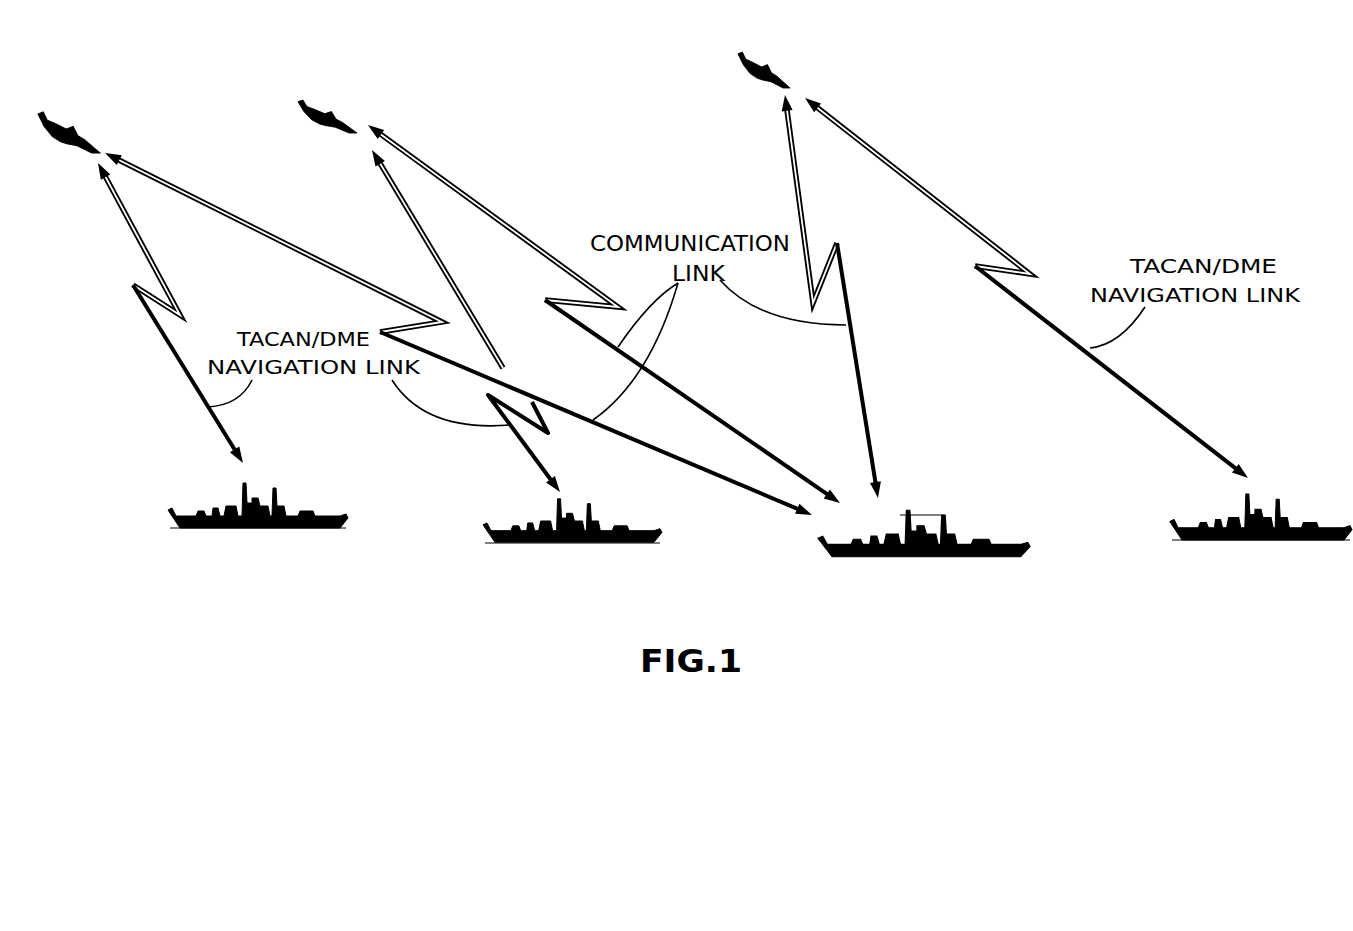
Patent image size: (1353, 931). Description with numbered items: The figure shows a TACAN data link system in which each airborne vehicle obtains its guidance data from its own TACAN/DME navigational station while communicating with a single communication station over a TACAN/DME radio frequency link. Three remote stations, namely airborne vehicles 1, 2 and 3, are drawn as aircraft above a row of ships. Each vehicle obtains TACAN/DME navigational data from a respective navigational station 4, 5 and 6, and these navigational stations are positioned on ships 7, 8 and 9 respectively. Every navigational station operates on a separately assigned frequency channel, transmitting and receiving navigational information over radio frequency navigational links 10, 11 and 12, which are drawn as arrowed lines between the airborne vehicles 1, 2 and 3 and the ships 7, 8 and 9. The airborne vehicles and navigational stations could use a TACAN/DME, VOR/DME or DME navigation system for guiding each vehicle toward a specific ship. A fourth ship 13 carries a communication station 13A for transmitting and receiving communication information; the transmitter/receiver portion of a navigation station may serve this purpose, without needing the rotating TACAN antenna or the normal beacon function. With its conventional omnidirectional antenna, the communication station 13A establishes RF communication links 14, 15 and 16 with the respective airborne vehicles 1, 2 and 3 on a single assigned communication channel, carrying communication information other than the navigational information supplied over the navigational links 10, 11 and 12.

The remote station (airborne vehicle) 1 is at (67, 130).
The remote station (airborne vehicle) 2 is at (327, 115).
The remote station (airborne vehicle) 3 is at (767, 70).
The navigational station 4 is at (257, 490).
The navigational station 5 is at (570, 505).
The navigational station 6 is at (1265, 495).
The ship 7 is at (243, 532).
The ship 8 is at (557, 547).
The ship 9 is at (1248, 540).
The radio frequency navigational link 10 is at (178, 358).
The radio frequency navigational link 11 is at (527, 452).
The radio frequency navigational link 12 is at (1148, 395).
The fourth ship 13 is at (920, 560).
The communication station 13A is at (923, 527).
The RF communication link 14 is at (690, 465).
The RF communication link 15 is at (688, 395).
The RF communication link 16 is at (862, 390).